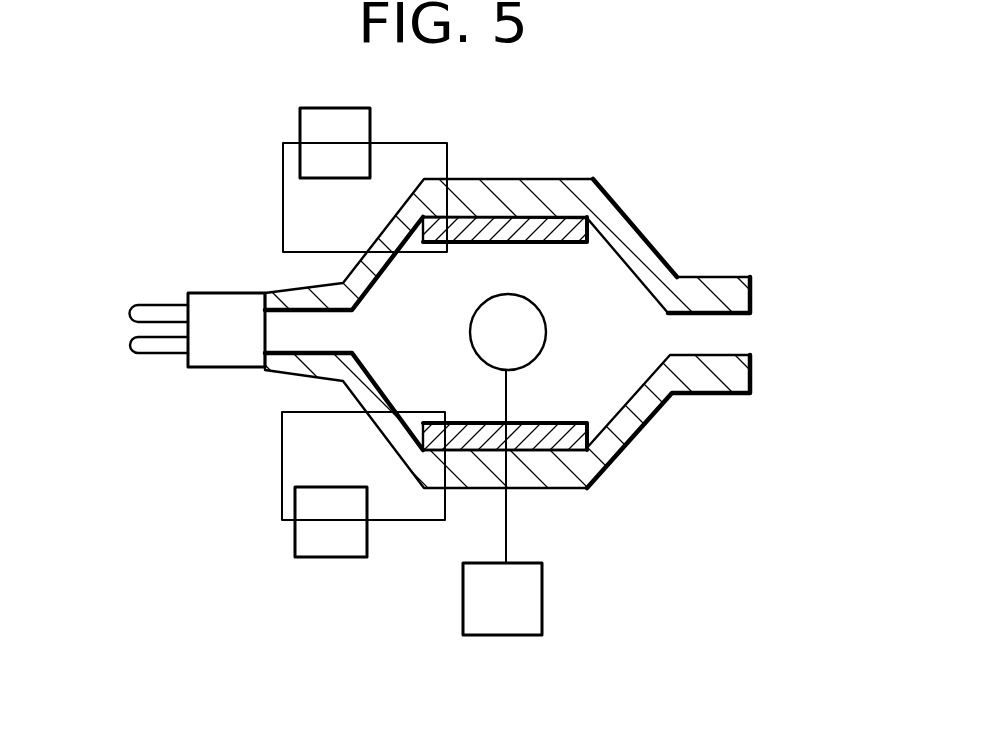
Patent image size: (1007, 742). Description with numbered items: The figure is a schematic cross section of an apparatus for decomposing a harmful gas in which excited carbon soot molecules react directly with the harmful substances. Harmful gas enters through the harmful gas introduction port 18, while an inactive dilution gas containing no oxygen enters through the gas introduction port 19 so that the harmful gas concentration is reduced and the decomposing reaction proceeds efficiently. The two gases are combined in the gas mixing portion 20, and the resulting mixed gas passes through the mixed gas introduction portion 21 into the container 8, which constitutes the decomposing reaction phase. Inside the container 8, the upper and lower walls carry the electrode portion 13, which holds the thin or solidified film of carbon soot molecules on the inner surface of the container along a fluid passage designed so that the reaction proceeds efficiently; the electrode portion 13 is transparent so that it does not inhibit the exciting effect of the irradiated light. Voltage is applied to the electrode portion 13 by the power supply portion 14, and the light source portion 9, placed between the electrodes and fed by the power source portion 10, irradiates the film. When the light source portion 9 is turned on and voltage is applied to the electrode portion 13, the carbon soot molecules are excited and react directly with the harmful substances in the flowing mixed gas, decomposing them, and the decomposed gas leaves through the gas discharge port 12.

The container 8 is at (582, 197).
The light source portion 9 is at (520, 325).
The power source portion 10 is at (528, 598).
The gas discharge port 12 is at (733, 336).
The electrode portion 13 is at (592, 225).
The power supply portion 14 is at (360, 123).
The harmful gas introduction port 18 is at (145, 310).
The gas introduction port 19 is at (148, 347).
The gas mixing portion 20 is at (208, 313).
The mixed gas introduction portion 21 is at (305, 330).